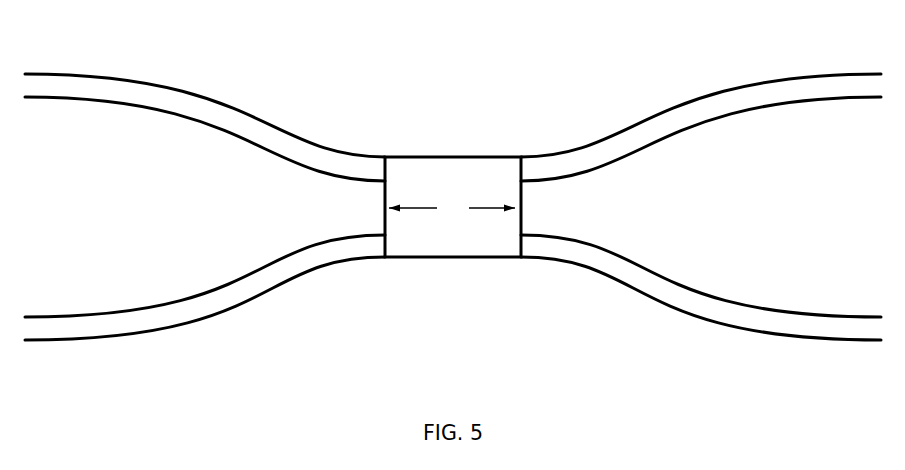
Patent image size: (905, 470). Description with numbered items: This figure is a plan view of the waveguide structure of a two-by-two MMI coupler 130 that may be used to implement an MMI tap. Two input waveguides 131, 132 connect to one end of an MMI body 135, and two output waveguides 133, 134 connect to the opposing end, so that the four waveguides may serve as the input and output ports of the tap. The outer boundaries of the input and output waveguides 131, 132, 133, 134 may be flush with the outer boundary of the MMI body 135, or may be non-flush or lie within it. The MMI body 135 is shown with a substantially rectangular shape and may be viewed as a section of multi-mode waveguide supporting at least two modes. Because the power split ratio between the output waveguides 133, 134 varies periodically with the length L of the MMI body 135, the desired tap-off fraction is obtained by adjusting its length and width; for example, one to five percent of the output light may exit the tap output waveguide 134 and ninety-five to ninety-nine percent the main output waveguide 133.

The 2×2 MMI coupler 130 is at (437, 30).
The input waveguide 131 is at (177, 93).
The input waveguide 132 is at (222, 315).
The main output waveguide 133 is at (595, 273).
The tap output waveguide 134 is at (613, 130).
The MMI body 135 is at (447, 157).